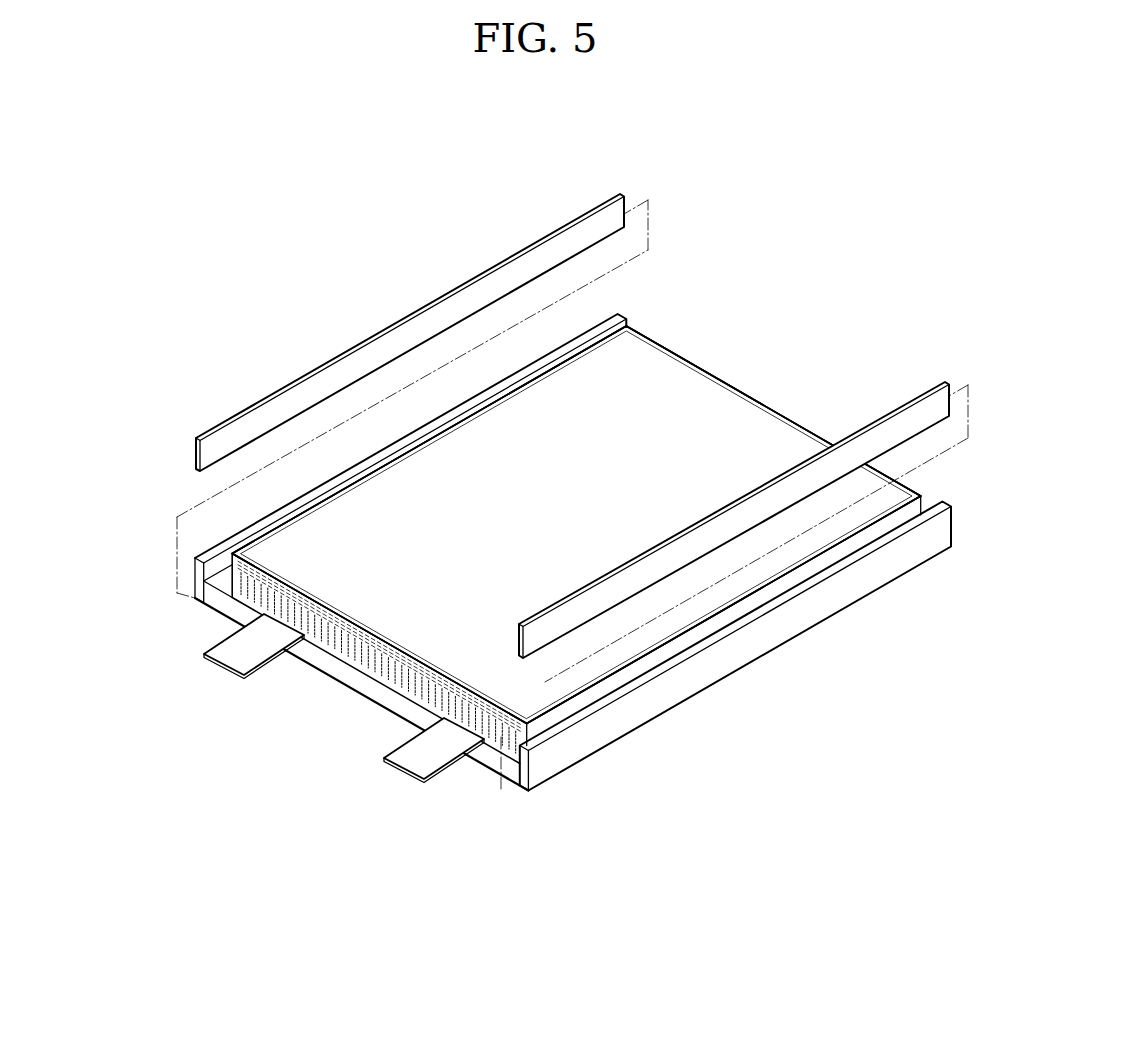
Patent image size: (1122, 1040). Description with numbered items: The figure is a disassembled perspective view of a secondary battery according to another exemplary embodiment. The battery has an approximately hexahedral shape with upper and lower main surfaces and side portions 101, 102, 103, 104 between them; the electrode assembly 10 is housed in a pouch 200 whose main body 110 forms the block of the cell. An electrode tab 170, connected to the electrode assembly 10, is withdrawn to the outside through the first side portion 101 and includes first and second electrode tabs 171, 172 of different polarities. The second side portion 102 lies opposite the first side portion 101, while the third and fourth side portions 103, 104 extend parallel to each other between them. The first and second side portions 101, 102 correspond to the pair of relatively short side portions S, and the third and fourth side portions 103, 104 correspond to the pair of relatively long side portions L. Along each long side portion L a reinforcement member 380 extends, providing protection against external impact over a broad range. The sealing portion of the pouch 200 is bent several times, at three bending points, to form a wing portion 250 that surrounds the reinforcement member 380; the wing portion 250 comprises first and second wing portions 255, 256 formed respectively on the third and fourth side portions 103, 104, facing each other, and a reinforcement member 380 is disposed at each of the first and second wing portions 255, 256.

The electrode assembly 10 is at (539, 585).
The first side portion 101 is at (353, 707).
The second side portion 102 is at (790, 395).
The third side portion 103 is at (398, 428).
The fourth side portion 104 is at (752, 681).
The main body 110 is at (697, 385).
The electrode tab 170 is at (321, 737).
The first electrode tab 171 is at (213, 673).
The second electrode tab 172 is at (393, 772).
The pouch 200 is at (514, 597).
The wing portion 250 is at (530, 597).
The first wing portion 255 is at (258, 509).
The second wing portion 256 is at (606, 768).
The reinforcement member 380 is at (606, 198).
The long side portions L is at (722, 612).
The short side portions S is at (386, 635).